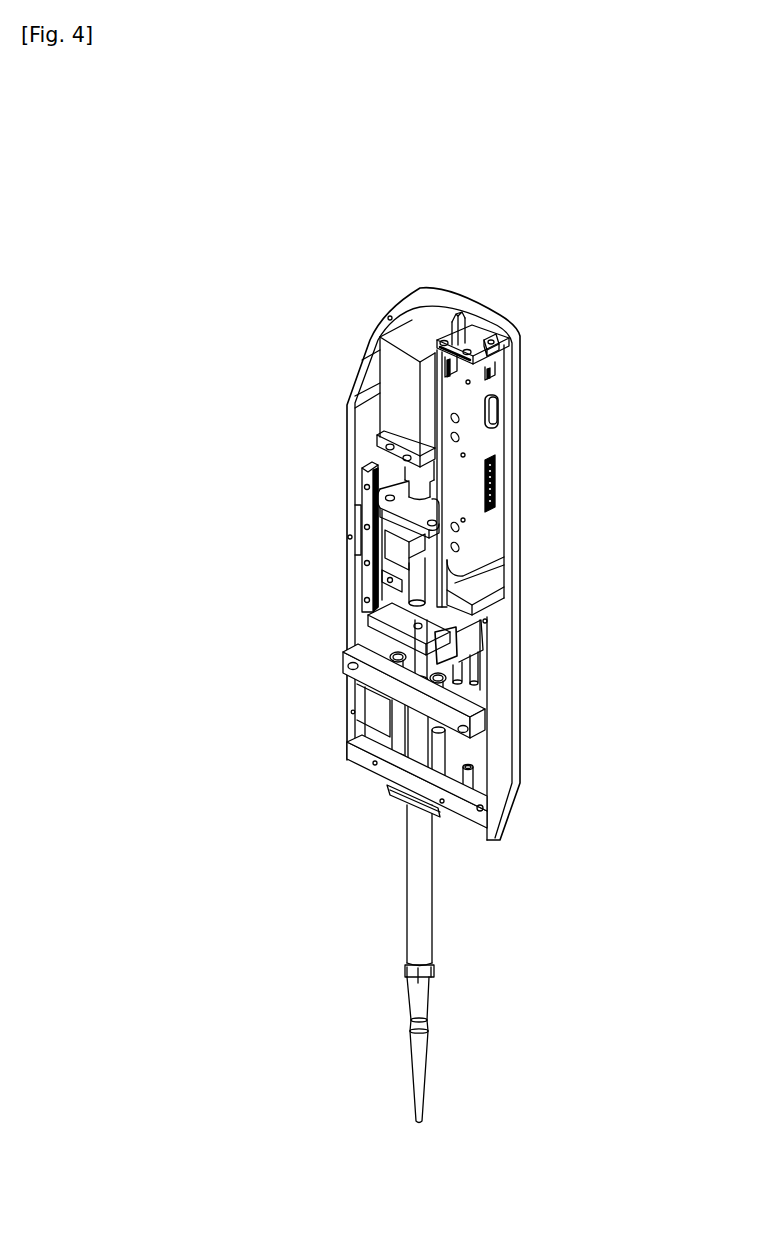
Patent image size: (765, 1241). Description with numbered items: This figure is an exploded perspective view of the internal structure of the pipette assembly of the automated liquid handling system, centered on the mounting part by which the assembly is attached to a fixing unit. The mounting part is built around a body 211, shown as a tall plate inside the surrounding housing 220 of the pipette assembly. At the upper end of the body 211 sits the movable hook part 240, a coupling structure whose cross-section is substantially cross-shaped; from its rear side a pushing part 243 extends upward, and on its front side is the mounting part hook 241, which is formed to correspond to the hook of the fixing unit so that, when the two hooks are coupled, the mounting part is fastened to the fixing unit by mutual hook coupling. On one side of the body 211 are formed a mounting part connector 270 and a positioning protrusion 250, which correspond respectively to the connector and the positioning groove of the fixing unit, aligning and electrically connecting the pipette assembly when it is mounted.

The body 211 is at (492, 545).
The housing frame 220 is at (514, 456).
The movable hook part 240 is at (475, 332).
The mounting part hook 241 is at (493, 338).
The pushing part 243 is at (458, 318).
The positioning protrusion 250 is at (497, 410).
The mounting part connector 270 is at (495, 493).